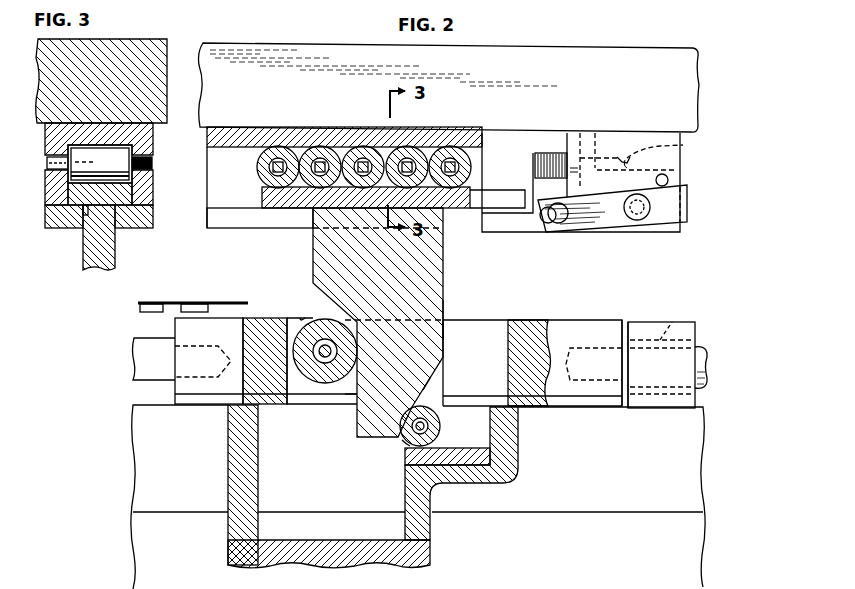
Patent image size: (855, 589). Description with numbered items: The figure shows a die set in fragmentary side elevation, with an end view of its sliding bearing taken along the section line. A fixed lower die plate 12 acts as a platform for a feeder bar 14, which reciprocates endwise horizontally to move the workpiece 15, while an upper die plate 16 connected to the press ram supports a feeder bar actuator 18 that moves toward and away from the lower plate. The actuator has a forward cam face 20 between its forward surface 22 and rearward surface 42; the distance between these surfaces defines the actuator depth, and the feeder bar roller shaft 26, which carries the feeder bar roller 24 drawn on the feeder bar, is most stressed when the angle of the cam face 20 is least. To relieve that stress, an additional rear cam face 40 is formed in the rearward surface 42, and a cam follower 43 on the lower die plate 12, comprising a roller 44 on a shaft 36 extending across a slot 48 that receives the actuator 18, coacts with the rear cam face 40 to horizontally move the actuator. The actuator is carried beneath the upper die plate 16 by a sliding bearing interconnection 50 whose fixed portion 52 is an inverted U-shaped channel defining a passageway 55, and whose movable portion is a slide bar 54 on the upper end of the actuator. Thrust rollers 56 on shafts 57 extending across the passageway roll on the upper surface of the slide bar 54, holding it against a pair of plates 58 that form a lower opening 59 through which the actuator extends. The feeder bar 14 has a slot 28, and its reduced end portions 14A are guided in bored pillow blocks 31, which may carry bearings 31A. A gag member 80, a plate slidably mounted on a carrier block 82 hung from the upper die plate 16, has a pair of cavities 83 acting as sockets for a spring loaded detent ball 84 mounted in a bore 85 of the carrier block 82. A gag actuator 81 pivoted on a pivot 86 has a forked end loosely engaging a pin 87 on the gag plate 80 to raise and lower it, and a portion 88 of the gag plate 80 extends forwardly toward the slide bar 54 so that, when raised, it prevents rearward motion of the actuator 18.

In FIG. 2, the lower die plate 12 is at (690, 478).
In FIG. 2, the feeder bar 14 is at (533, 335).
In FIG. 2, the end portions of the feeder bar 14A is at (148, 360).
In FIG. 2, the workpiece 15 is at (160, 303).
In FIG. 3, the upper die plate 16 is at (90, 85).
In FIG. 2, the upper die plate 16 is at (527, 91).
In FIG. 3, the feeder bar actuator 18 is at (96, 262).
In FIG. 2, the feeder bar actuator 18 is at (425, 294).
In FIG. 2, the cam face 20 is at (312, 303).
In FIG. 2, the forward surface of the actuator 22 is at (313, 248).
In FIG. 2, the roller 24 is at (320, 380).
In FIG. 2, the feeder bar roller shaft 26 is at (322, 346).
In FIG. 2, the slot 28 is at (467, 348).
In FIG. 2, the pillow blocks 31 is at (642, 333).
In FIG. 2, the bearings 31A is at (684, 318).
In FIG. 2, the shaft 36 is at (436, 432).
In FIG. 2, the rear cam face 40 is at (440, 378).
In FIG. 2, the rearward surface of the actuator 42 is at (445, 318).
In FIG. 2, the cam follower 43 is at (398, 441).
In FIG. 2, the roller 44 is at (442, 420).
In FIG. 2, the slot 48 is at (294, 481).
In FIG. 2, the sliding bearing interconnection 50 is at (204, 216).
In FIG. 3, the fixed portion 52 is at (207, 152).
In FIG. 2, the fixed portion 52 is at (344, 177).
In FIG. 3, the slide bar 54 is at (127, 190).
In FIG. 2, the slide bar 54 is at (262, 196).
In FIG. 3, the passageway 55 is at (268, 167).
In FIG. 2, the passageway 55 is at (278, 167).
In FIG. 3, the thrust rollers 56 is at (86, 155).
In FIG. 2, the thrust rollers 56 is at (323, 158).
In FIG. 3, the shafts 57 is at (50, 165).
In FIG. 2, the shafts 57 is at (322, 158).
In FIG. 3, the plates 58 is at (52, 215).
In FIG. 2, the plates 58 is at (232, 227).
In FIG. 3, the lower opening 59 is at (88, 215).
In FIG. 2, the gag member 80 is at (542, 153).
In FIG. 2, the gag actuator 81 is at (612, 218).
In FIG. 2, the carrier block 82 is at (625, 141).
In FIG. 2, the cavities 83 is at (580, 184).
In FIG. 2, the detent ball 84 is at (595, 138).
In FIG. 2, the bore 85 is at (681, 149).
In FIG. 2, the pivot 86 is at (636, 220).
In FIG. 2, the pin 87 is at (553, 226).
In FIG. 2, the gag plate portion 88 is at (500, 226).